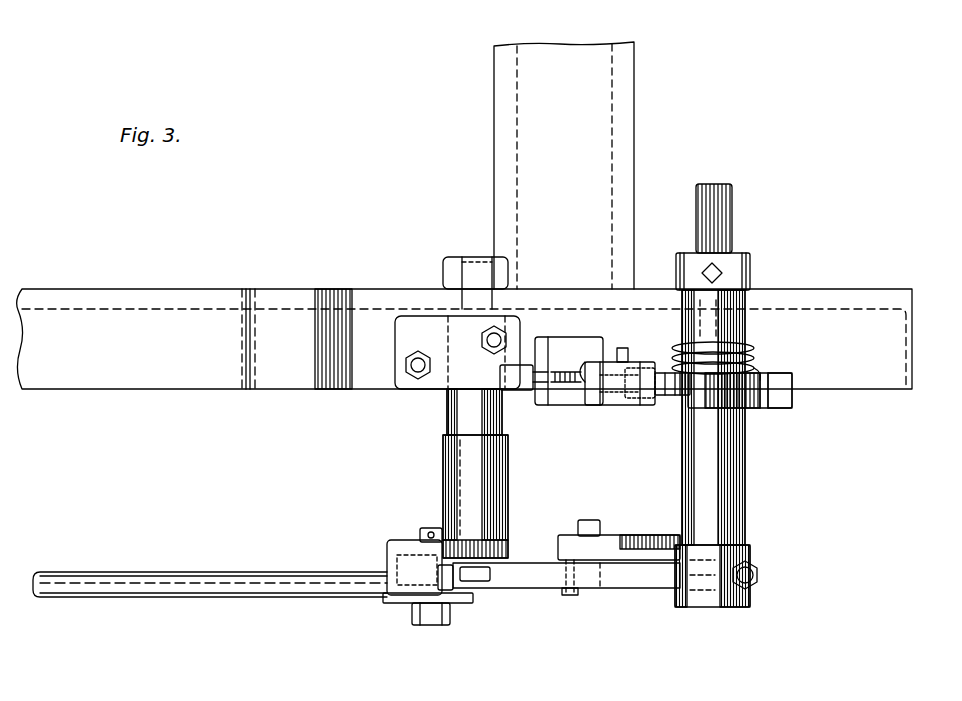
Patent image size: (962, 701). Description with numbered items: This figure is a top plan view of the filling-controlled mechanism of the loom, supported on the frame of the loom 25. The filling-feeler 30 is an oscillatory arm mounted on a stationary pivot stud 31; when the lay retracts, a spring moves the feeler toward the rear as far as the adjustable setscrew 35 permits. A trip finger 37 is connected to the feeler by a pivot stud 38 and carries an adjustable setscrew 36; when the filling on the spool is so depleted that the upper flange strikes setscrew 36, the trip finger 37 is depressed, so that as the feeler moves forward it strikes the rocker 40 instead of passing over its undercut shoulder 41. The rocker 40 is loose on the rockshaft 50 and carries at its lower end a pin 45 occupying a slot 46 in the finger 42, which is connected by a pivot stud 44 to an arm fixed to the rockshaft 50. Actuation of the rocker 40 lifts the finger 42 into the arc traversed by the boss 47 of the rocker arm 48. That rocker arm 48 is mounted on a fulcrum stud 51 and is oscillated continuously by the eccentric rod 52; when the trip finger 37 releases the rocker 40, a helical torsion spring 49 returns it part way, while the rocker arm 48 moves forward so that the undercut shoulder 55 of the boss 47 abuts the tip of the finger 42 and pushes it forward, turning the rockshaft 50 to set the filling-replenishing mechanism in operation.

The frame of the loom 25 is at (875, 300).
The filling-feeler 30 is at (590, 405).
The pivot stud 31 is at (622, 405).
The adjustable setscrew 35 is at (484, 357).
The adjustable setscrew 36 is at (640, 405).
The trip finger 37 is at (712, 404).
The pivot stud 38 is at (621, 348).
The rocker 40 is at (748, 405).
The undercut shoulder 41 is at (792, 397).
The finger 42 is at (453, 580).
The pivot stud 44 is at (700, 607).
The pin 45 is at (570, 595).
The slot 46 is at (425, 625).
The boss 47 is at (395, 600).
The rocker arm 48 is at (470, 545).
The helical torsion spring 49 is at (748, 362).
The rockshaft 50 is at (730, 200).
The fulcrum stud 51 is at (480, 575).
The eccentric rod 52 is at (136, 572).
The undercut shoulder 55 is at (415, 545).